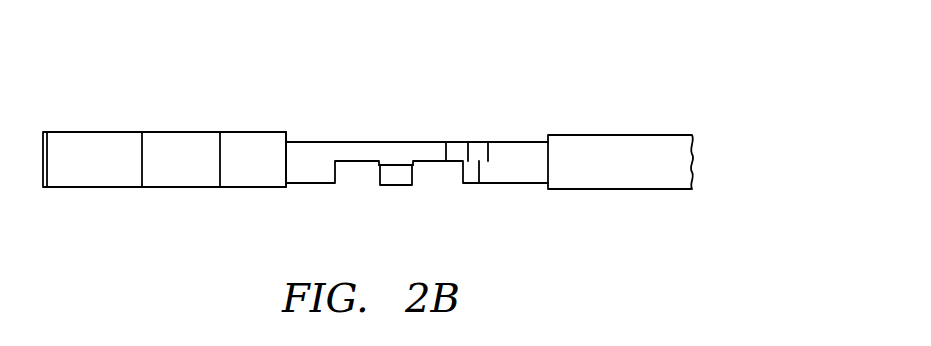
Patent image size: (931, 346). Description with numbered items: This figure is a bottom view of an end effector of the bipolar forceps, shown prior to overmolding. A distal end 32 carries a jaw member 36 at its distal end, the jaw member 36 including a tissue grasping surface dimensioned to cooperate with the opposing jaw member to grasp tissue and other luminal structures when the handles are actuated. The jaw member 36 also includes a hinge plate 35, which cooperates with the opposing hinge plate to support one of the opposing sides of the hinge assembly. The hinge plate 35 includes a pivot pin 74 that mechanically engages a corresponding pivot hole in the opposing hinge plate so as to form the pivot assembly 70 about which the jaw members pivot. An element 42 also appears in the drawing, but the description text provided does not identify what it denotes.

The distal end 32 is at (247, 131).
The hinge plate 35 is at (323, 150).
The jaw member 36 is at (107, 170).
The tubular member 42 is at (593, 148).
The pivot assembly 70 is at (390, 186).
The pivot pin 74 is at (405, 172).